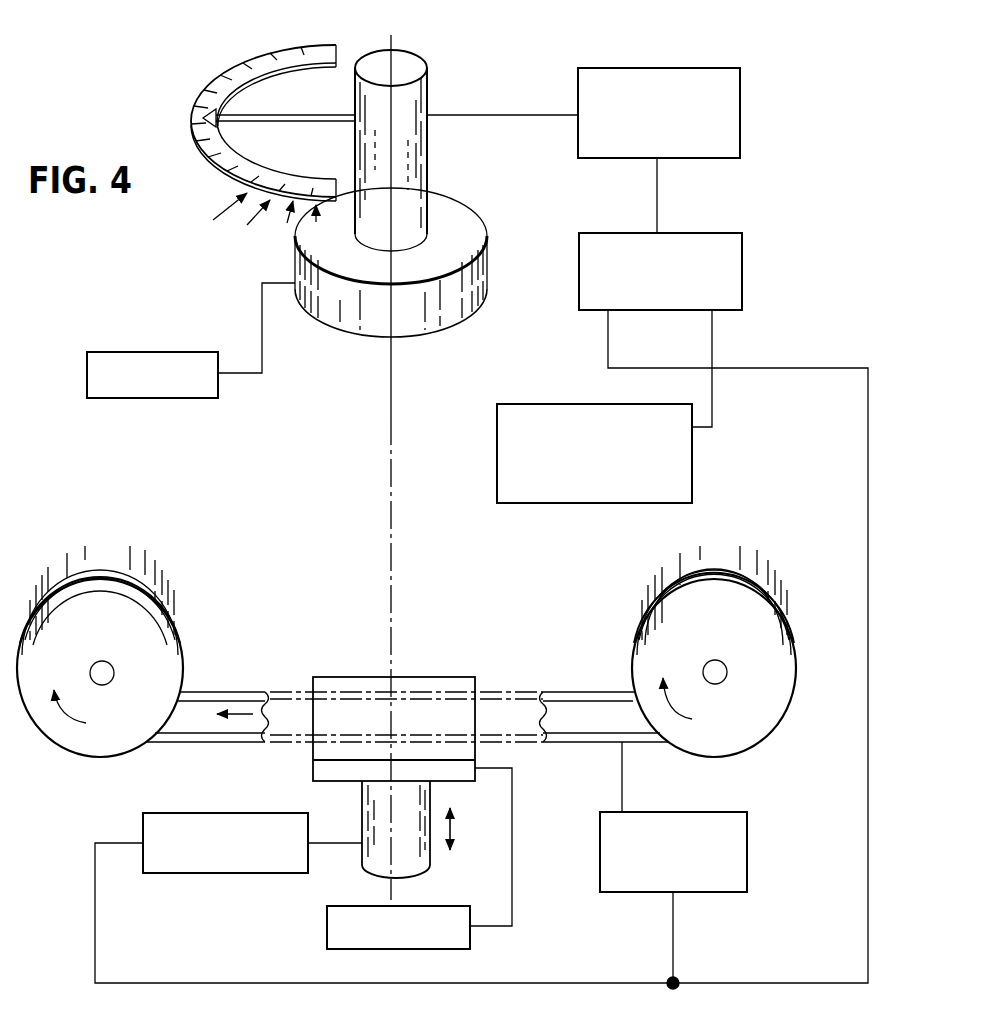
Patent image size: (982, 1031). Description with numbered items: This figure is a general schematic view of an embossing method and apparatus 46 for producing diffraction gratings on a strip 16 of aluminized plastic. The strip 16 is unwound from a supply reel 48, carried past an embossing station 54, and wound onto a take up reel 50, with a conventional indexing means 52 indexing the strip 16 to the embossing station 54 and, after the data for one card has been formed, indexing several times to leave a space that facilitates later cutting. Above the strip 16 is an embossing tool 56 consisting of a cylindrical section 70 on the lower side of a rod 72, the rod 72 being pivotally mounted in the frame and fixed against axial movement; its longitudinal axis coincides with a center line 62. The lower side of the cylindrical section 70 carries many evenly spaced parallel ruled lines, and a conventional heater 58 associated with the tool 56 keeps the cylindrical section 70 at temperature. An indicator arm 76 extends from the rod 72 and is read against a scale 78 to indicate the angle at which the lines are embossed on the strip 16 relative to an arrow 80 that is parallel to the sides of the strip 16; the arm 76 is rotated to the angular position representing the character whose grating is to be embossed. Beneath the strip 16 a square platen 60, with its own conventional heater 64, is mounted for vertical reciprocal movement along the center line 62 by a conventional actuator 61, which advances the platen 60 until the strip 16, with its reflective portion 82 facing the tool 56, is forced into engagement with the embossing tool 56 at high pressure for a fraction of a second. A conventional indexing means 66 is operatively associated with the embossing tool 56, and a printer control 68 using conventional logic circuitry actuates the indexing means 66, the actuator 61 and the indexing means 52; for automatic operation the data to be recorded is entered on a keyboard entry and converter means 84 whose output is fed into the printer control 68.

The strip 16 is at (218, 692).
The embossing apparatus 46 is at (549, 53).
The supply reel 48 is at (770, 549).
The take up reel 50 is at (128, 534).
The indexing means 52 is at (640, 892).
The embossing station 54 is at (408, 672).
The embossing tool 56 is at (430, 104).
The heater 58 is at (150, 352).
The square platen 60 is at (348, 677).
The actuator 61 is at (225, 873).
The center line 62 is at (390, 460).
The heater 64 is at (327, 925).
The indexing means 66 is at (682, 68).
The printer control 68 is at (742, 273).
The cylindrical section 70 is at (487, 250).
The rod 72 is at (430, 172).
The indicator arm 76 is at (243, 112).
The scale 78 is at (265, 52).
The arrow 80 is at (246, 718).
The reflective portion 82 is at (573, 712).
The keyboard entry and converter means 84 is at (692, 478).